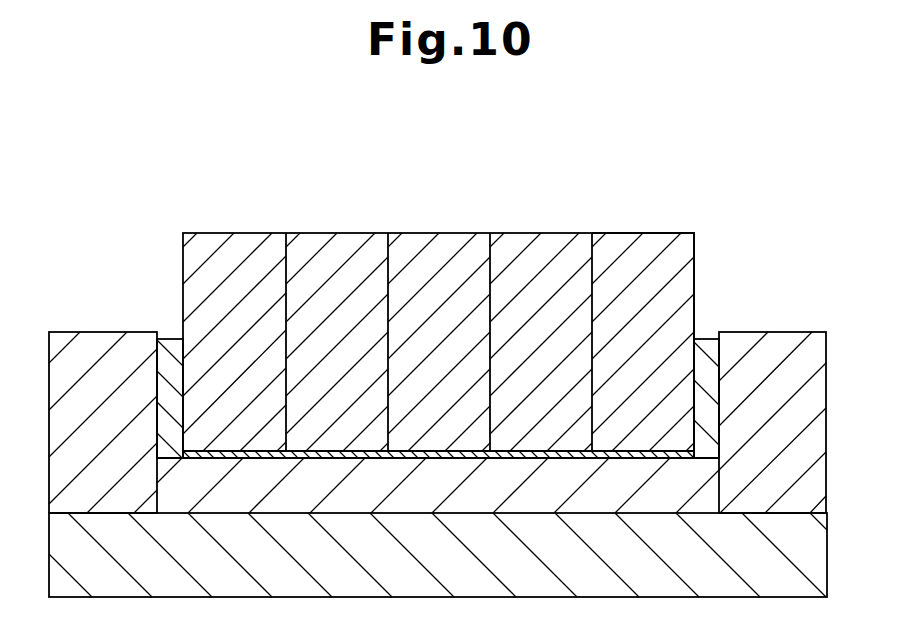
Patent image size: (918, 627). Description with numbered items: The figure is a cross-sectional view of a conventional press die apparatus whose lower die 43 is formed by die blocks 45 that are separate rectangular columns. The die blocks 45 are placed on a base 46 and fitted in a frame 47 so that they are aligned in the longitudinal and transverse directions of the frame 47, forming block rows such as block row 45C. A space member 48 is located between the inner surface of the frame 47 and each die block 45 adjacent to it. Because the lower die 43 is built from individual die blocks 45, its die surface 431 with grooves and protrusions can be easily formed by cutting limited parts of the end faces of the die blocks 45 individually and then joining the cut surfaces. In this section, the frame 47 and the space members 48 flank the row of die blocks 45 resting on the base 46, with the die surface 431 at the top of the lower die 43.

The lower die 43 is at (230, 224).
The die surface 431 is at (667, 232).
The die blocks 45 is at (413, 233).
The block row 45C is at (344, 205).
The base 46 is at (415, 508).
The frame 47 is at (105, 338).
The space member 48 is at (174, 338).